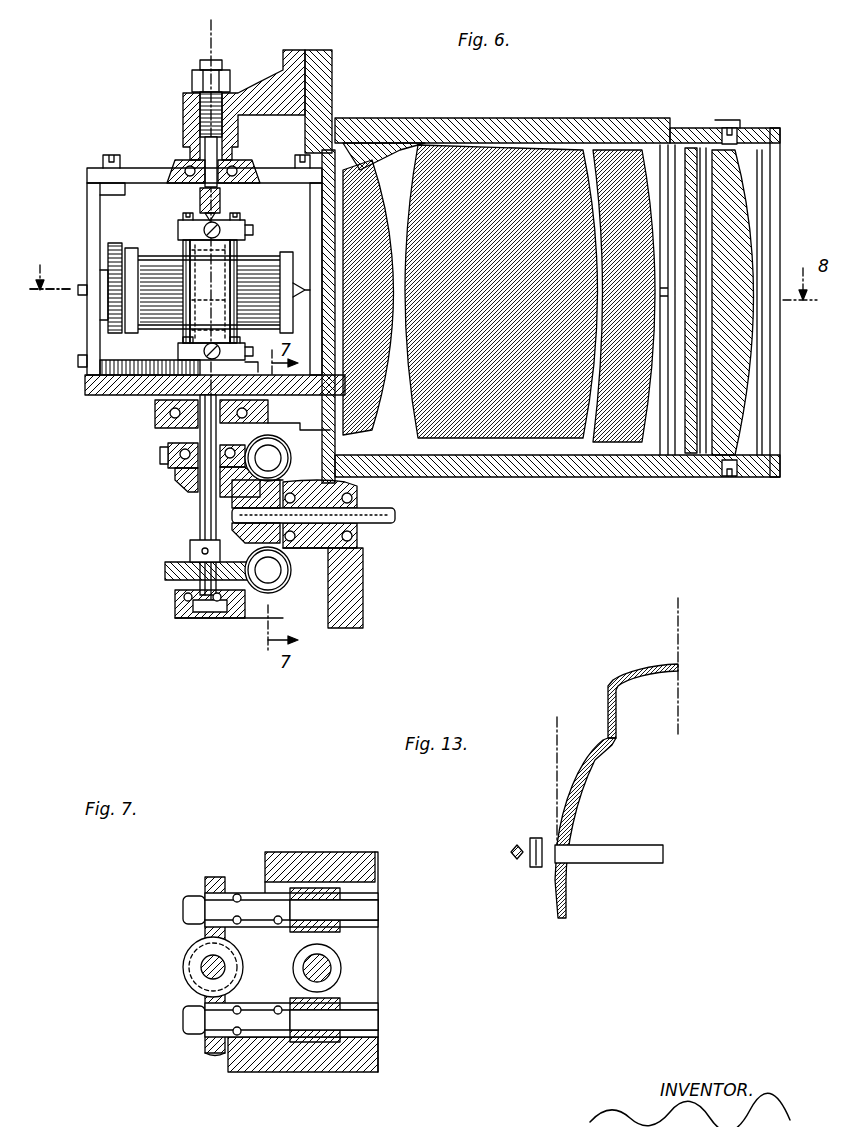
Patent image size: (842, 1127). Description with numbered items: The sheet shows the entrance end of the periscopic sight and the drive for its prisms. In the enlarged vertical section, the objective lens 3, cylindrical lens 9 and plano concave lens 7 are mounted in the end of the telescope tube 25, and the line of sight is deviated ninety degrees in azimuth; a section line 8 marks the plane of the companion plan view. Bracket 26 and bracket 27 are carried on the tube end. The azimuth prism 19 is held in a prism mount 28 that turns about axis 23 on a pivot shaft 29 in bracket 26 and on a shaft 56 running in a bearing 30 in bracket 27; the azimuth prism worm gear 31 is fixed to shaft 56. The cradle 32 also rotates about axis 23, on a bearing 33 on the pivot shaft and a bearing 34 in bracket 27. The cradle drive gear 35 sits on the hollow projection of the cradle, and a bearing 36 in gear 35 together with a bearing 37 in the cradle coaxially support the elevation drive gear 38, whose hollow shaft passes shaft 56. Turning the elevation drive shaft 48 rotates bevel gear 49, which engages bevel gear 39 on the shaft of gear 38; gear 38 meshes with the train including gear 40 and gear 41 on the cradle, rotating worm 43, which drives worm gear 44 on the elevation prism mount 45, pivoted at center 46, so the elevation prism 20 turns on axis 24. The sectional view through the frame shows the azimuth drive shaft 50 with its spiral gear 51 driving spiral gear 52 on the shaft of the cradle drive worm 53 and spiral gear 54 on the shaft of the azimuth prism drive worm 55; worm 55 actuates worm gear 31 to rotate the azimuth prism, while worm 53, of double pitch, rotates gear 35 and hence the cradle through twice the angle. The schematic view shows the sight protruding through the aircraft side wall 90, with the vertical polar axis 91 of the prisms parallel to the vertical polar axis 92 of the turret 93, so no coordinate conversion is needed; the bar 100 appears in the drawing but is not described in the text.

In FIG. 6, the objective lens 3 is at (500, 185).
In FIG. 6, the plano concave lens 7 is at (748, 200).
In FIG. 6, the section line of Fig. 8 is at (53, 270).
In FIG. 6, the cylindrical lens 9 is at (712, 158).
In FIG. 6, the azimuth prism 19 is at (225, 252).
In FIG. 13, the azimuth prism 19 is at (530, 868).
In FIG. 6, the elevation prism 20 is at (166, 270).
In FIG. 13, the elevation prism 20 is at (512, 852).
In FIG. 6, the axis 23 is at (213, 48).
In FIG. 6, the axis 24 is at (50, 292).
In FIG. 6, the end of the telescope tube 25 is at (322, 67).
In FIG. 6, the bracket 26 is at (290, 50).
In FIG. 6, the bracket 27 is at (322, 618).
In FIG. 7, the bracket 27 is at (340, 1062).
In FIG. 6, the prism mount 28 is at (178, 230).
In FIG. 6, the pivot shaft 29 is at (220, 200).
In FIG. 6, the bearing 30 is at (175, 600).
In FIG. 6, the azimuth prism worm gear 31 is at (165, 570).
In FIG. 6, the cradle 32 is at (87, 180).
In FIG. 6, the bearing 33 is at (190, 162).
In FIG. 6, the bearing 34 is at (165, 414).
In FIG. 6, the cradle drive gear 35 is at (160, 455).
In FIG. 6, the bearing 36 is at (178, 468).
In FIG. 6, the bearing 37 is at (176, 375).
In FIG. 6, the elevation drive gear 38 is at (245, 368).
In FIG. 6, the bevel gear 39 is at (176, 486).
In FIG. 6, the gear 40 is at (125, 372).
In FIG. 6, the gear 41 is at (78, 360).
In FIG. 6, the worm 43 is at (108, 272).
In FIG. 6, the worm gear 44 is at (108, 250).
In FIG. 6, the elevation prism mount 45 is at (130, 248).
In FIG. 6, the center 46 is at (300, 286).
In FIG. 6, the elevation drive shaft 48 is at (385, 523).
In FIG. 7, the elevation drive shaft 48 is at (340, 975).
In FIG. 6, the bevel gear 49 is at (240, 500).
In FIG. 7, the bevel gear 49 is at (330, 962).
In FIG. 7, the azimuth drive shaft 50 is at (205, 968).
In FIG. 7, the spiral gear 51 is at (190, 960).
In FIG. 7, the spiral gear 52 is at (215, 877).
In FIG. 6, the cradle drive worm 53 is at (288, 450).
In FIG. 7, the cradle drive worm 53 is at (345, 927).
In FIG. 7, the spiral gear 54 is at (212, 1055).
In FIG. 6, the azimuth prism drive worm 55 is at (285, 576).
In FIG. 7, the azimuth prism drive worm 55 is at (345, 1032).
In FIG. 6, the shaft 56 is at (200, 528).
In FIG. 13, the side wall 90 is at (582, 772).
In FIG. 13, the vertical polar axis 91 is at (555, 785).
In FIG. 13, the vertical polar axis 92 is at (680, 628).
In FIG. 13, the turret 93 is at (640, 665).
In FIG. 13, the bar 100 is at (645, 845).